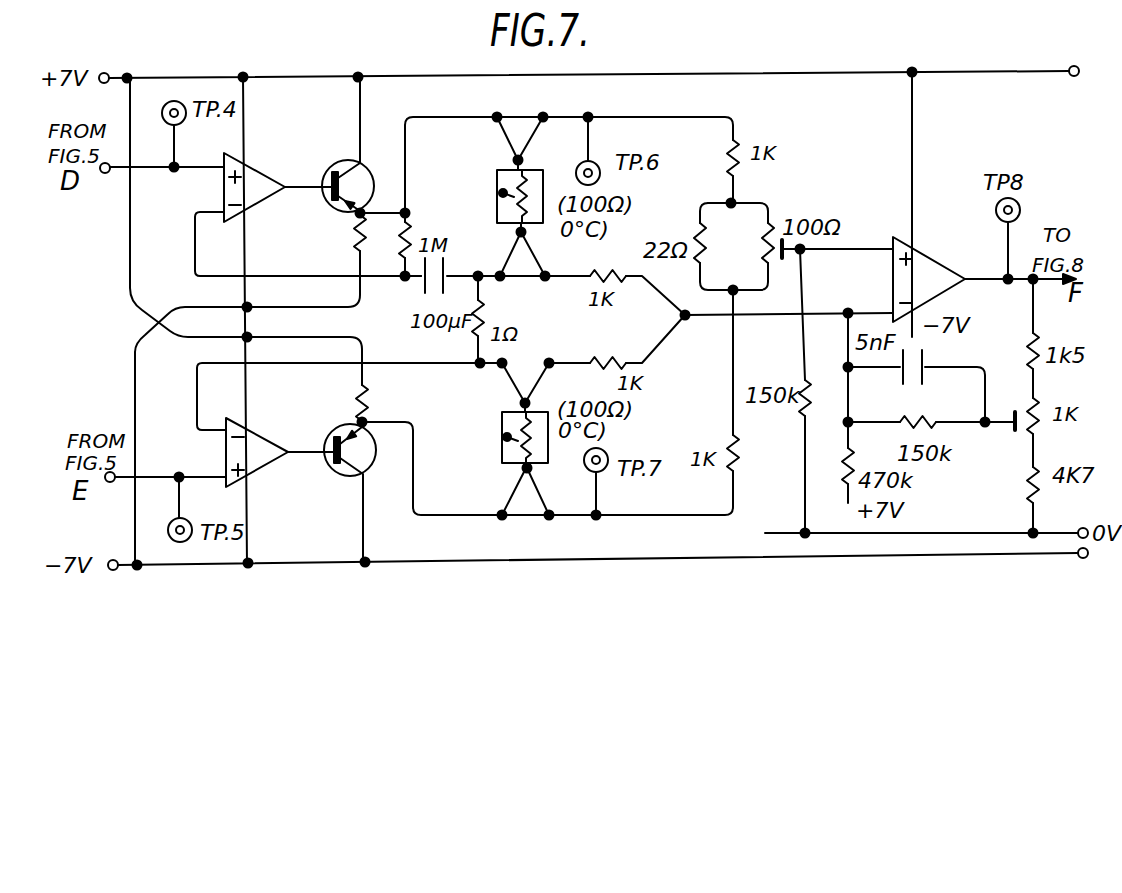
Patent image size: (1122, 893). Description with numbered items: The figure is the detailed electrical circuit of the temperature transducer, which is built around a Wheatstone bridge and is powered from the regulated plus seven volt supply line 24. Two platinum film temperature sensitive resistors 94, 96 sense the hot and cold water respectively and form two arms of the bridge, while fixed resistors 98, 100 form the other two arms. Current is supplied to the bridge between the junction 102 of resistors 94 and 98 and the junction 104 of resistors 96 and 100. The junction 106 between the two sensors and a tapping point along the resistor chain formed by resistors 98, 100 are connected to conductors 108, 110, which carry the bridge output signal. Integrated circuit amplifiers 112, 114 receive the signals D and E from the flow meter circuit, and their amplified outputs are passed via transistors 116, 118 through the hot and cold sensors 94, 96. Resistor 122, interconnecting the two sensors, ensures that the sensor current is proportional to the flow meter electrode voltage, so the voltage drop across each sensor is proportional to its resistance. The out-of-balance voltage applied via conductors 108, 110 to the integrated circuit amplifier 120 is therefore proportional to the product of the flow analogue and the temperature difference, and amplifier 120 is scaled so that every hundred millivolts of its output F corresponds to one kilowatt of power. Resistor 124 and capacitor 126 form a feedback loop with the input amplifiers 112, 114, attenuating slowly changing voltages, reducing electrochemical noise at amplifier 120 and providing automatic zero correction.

The regulated power supply line 24 is at (284, 79).
The temperature sensitive resistor 94 is at (497, 179).
The temperature sensitive resistor 96 is at (500, 431).
The fixed resistor 98 is at (750, 196).
The fixed resistor 100 is at (744, 462).
The junction 102 is at (521, 160).
The junction 104 is at (518, 470).
The junction 106 is at (688, 320).
The conductor 108 is at (830, 303).
The conductor 110 is at (860, 243).
The integrated circuit amplifier 112 is at (224, 188).
The integrated circuit amplifier 114 is at (226, 455).
The transistor 116 is at (334, 161).
The transistor 118 is at (340, 425).
The integrated circuit amplifier 120 is at (933, 280).
The resistor 122 is at (488, 318).
The resistor 124 is at (408, 228).
The capacitor 126 is at (438, 296).